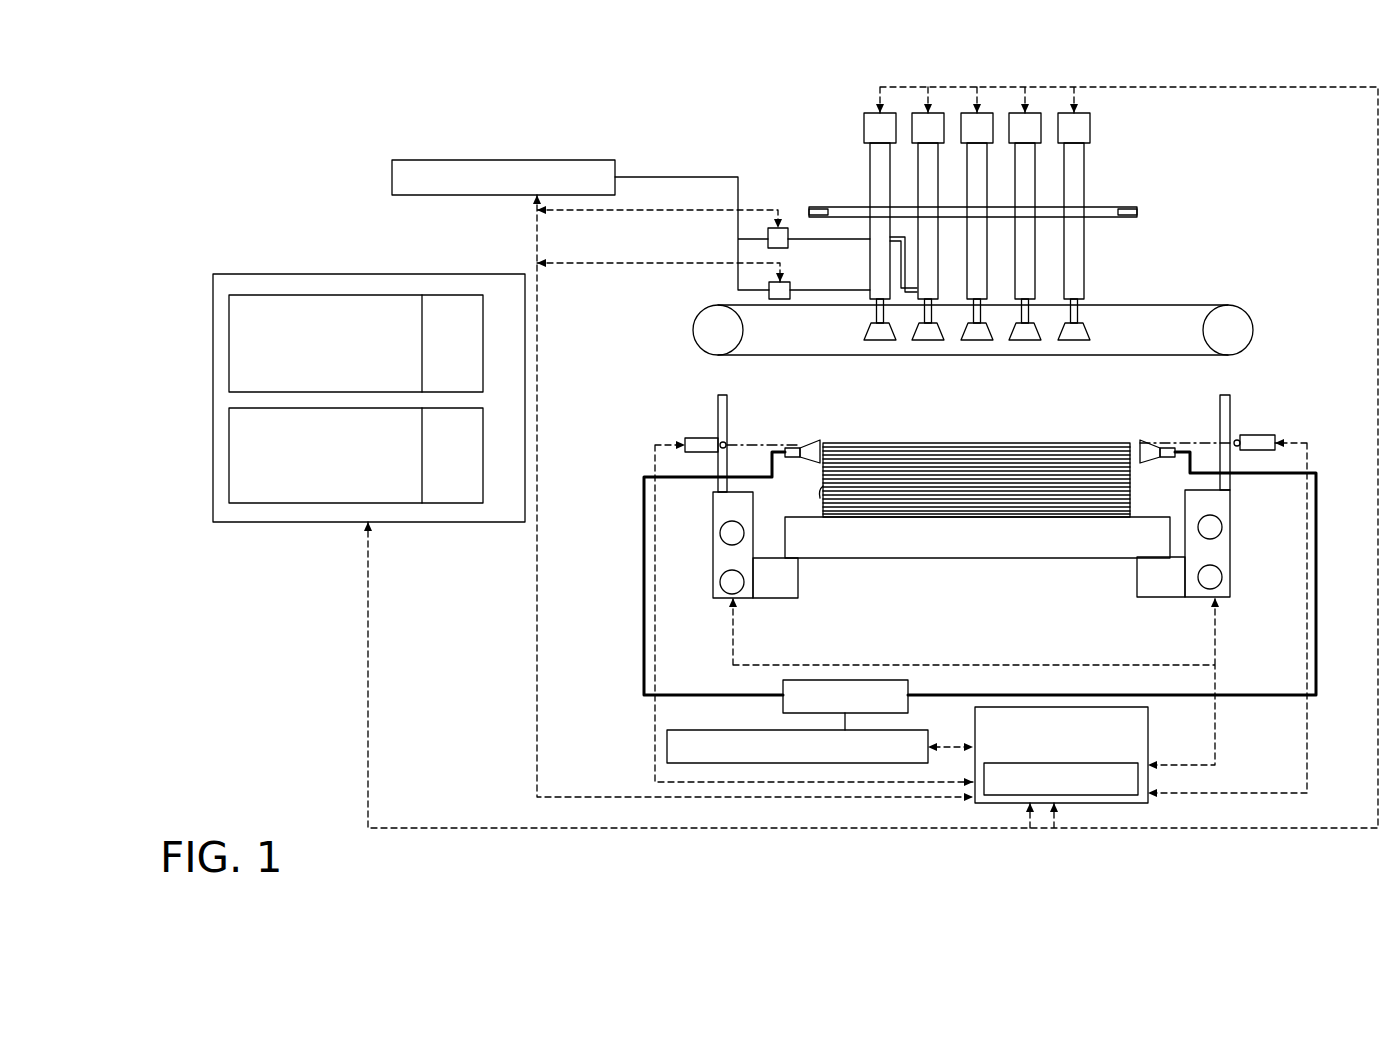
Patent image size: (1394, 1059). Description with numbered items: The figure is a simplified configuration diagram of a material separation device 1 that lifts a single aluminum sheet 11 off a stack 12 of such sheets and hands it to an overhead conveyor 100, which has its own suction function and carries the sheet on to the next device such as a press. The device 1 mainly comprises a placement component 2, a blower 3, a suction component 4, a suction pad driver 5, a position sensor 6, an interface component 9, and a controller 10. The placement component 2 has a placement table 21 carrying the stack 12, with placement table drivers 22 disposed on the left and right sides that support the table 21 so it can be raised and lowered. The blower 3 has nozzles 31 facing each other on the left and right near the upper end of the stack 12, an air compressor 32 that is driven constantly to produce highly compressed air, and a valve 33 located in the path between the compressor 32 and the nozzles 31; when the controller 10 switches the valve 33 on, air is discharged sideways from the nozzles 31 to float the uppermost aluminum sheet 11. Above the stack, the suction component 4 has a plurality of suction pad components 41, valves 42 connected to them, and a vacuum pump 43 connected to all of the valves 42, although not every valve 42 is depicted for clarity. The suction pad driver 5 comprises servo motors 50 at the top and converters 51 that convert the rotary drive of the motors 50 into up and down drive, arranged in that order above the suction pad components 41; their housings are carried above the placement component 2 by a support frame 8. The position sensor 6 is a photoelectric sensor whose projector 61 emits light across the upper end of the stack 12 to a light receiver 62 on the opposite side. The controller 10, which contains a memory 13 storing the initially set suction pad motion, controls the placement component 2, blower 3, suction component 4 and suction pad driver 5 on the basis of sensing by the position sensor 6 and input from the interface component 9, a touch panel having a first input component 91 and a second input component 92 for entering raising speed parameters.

The material separation device 1 is at (398, 126).
The placement component 2 is at (995, 541).
The blower 3 is at (1182, 428).
The suction component 4 is at (1018, 262).
The suction pad driver 5 is at (1016, 262).
The position sensor 6 is at (995, 439).
The support frame 8 is at (1130, 208).
The interface component 9 is at (340, 363).
The controller 10 is at (1061, 755).
The aluminum sheet 11 is at (1052, 443).
The stack 12 is at (823, 486).
The memory 13 is at (1061, 779).
The placement table 21 is at (942, 550).
The placement table drivers 22 is at (1195, 590).
The nozzles 31 is at (813, 446).
The air compressor 32 is at (797, 746).
The valve 33 is at (845, 696).
The suction pad components 41 is at (930, 342).
The valves 42 is at (778, 226).
The vacuum pump 43 is at (503, 177).
The servo motors 50 is at (1082, 125).
The converters 51 is at (1068, 190).
The projector 61 is at (1262, 451).
The light receiver 62 is at (690, 436).
The first input component 91 is at (229, 345).
The second input component 92 is at (229, 448).
The conveyor 100 is at (1248, 324).